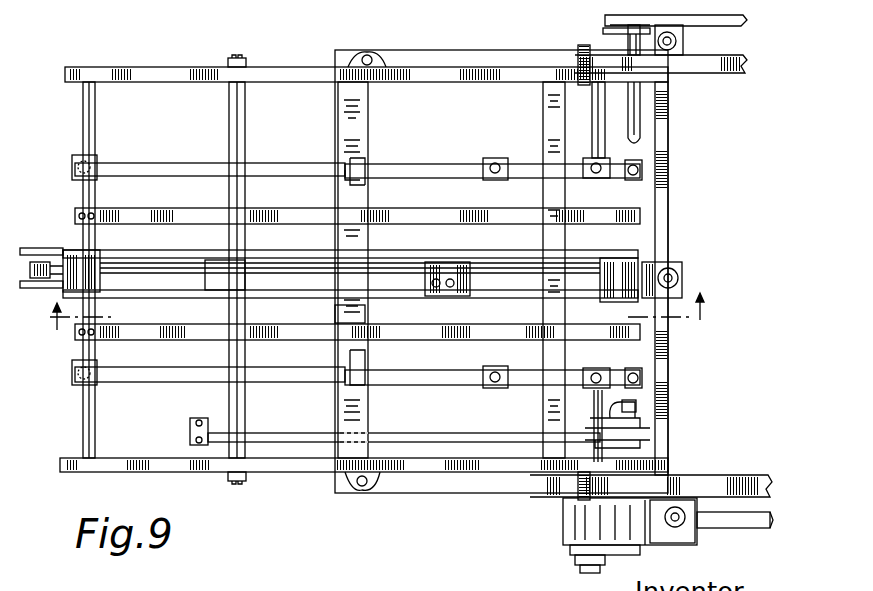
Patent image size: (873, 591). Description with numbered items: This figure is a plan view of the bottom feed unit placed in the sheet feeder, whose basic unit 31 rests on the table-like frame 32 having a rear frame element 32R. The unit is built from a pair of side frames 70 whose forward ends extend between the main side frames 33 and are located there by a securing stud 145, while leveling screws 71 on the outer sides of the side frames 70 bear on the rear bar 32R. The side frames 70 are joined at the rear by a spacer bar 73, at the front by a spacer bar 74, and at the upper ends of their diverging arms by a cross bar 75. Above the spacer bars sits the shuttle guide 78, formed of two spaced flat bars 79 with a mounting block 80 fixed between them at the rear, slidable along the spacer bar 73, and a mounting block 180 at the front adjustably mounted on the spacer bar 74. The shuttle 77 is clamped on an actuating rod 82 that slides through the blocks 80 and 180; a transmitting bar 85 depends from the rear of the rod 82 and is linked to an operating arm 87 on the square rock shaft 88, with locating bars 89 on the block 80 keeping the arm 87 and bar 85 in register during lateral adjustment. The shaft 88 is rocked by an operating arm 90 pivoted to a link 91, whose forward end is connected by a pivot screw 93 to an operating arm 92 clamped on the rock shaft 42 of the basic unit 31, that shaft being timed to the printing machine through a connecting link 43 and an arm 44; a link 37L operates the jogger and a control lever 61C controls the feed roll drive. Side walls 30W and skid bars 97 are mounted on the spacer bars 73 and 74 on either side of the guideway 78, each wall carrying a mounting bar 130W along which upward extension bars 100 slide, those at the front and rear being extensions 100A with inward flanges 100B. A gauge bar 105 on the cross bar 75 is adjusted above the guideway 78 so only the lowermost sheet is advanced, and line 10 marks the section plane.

The frame 32 is at (408, 52).
The rear frame element 32R is at (338, 104).
The side frames 70 is at (163, 68).
The side frames 33 is at (717, 70).
The spacer bar 73 is at (95, 112).
The rock shaft 88 is at (246, 148).
The spacer bar 74 is at (565, 118).
The cross bar 75 is at (668, 163).
The mounting bar 130W is at (132, 165).
The side walls 30W is at (390, 170).
The extensions 100A is at (365, 180).
The flanges 100B is at (345, 180).
The upward extension bars 100 is at (485, 180).
The skid bars 97 is at (165, 208).
The shuttle guide 78 is at (305, 242).
The flat bars 79 is at (380, 258).
The mounting block 80 is at (95, 262).
The locating bars 89 is at (50, 248).
The transmitting bar 85 is at (45, 280).
The operating arm 87 is at (210, 290).
The actuating rod 82 is at (350, 314).
The shuttle 77 is at (430, 296).
The mounting block 180 is at (640, 262).
The gauge bar 105 is at (682, 268).
The section line 10 is at (384, 316).
The operating arm 90 is at (208, 418).
The link 91 is at (378, 433).
The pivot screw 93 is at (585, 428).
The operating arm 92 is at (628, 405).
The rock shaft 42 is at (640, 128).
The securing stud 145 is at (578, 45).
The basic unit 31 is at (733, 35).
The arm 44 is at (603, 28).
The connecting link 43 is at (672, 20).
The leveling screws 71 is at (355, 50).
The link 37L is at (720, 530).
The control lever 61C is at (570, 552).